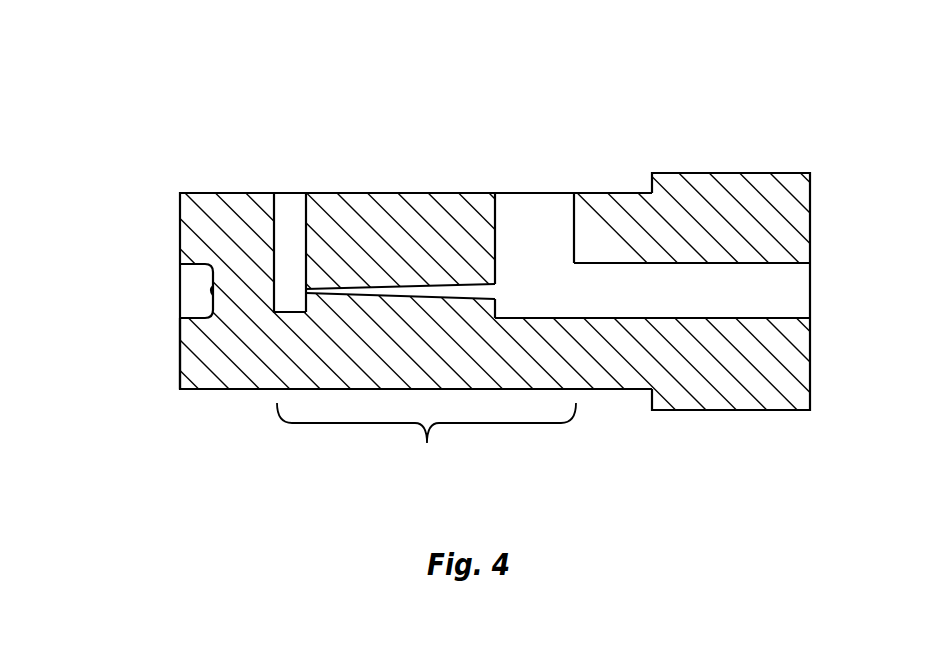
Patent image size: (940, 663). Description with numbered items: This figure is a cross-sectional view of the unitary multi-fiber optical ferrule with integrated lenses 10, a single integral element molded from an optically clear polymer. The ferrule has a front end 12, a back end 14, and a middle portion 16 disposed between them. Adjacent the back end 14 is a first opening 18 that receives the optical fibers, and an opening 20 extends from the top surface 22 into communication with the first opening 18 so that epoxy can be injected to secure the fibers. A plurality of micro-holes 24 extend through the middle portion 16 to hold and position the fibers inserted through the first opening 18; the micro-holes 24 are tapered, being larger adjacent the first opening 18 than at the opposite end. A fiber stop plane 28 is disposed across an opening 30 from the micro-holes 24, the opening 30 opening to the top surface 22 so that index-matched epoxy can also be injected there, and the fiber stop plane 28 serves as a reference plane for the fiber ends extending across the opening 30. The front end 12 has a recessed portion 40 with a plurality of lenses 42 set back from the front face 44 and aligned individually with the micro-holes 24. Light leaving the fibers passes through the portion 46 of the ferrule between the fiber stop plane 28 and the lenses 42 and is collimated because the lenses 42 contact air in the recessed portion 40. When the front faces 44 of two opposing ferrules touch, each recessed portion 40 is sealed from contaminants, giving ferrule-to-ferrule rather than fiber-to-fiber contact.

The unitary multi-fiber optical ferrule with integrated lenses 10 is at (634, 118).
The front end 12 is at (170, 213).
The back end 14 is at (810, 213).
The middle portion 16 is at (426, 443).
The first opening 18 is at (788, 290).
The opening 20 is at (545, 193).
The top surface 22 is at (385, 193).
The micro-holes 24 is at (453, 292).
The fiber stop plane 28 is at (283, 200).
The opening 30 is at (300, 205).
The recessed portion 40 is at (198, 309).
The lenses 42 is at (205, 290).
The front face 44 is at (178, 353).
The portion 46 is at (232, 292).